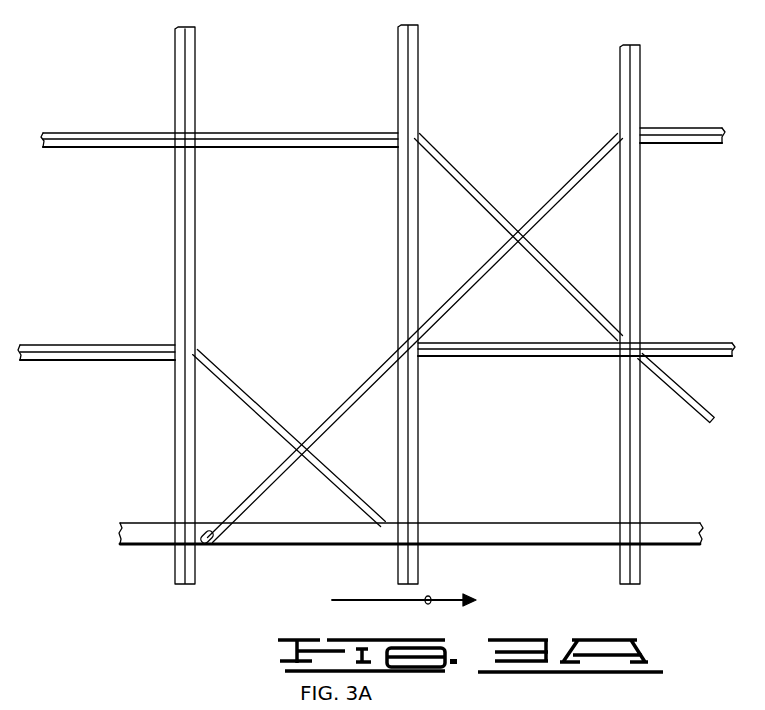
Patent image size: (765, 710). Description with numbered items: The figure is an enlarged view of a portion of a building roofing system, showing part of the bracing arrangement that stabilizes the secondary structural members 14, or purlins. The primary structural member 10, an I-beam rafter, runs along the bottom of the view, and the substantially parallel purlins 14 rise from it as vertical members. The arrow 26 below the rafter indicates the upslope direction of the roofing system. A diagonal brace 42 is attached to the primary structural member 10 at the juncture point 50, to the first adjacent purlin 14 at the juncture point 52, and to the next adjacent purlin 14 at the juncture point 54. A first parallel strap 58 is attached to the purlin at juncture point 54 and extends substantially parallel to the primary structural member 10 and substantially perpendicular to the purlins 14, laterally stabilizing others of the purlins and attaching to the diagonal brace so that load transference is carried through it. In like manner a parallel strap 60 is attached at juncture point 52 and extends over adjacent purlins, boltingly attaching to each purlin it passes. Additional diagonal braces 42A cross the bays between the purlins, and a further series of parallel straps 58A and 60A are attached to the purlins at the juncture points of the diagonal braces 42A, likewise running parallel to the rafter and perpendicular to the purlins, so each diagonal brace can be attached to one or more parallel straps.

The primary structural member 10 is at (157, 530).
The secondary structural member 14 is at (197, 219).
The arrow 26 is at (430, 597).
The diagonal brace 42 is at (454, 320).
The diagonal brace 42A is at (321, 467).
The juncture point 50 is at (201, 496).
The juncture point 52 is at (399, 352).
The juncture point 54 is at (622, 136).
The parallel strap 58 is at (673, 143).
The parallel strap 58A is at (210, 133).
The parallel strap 60 is at (472, 358).
The parallel strap 60A is at (50, 344).